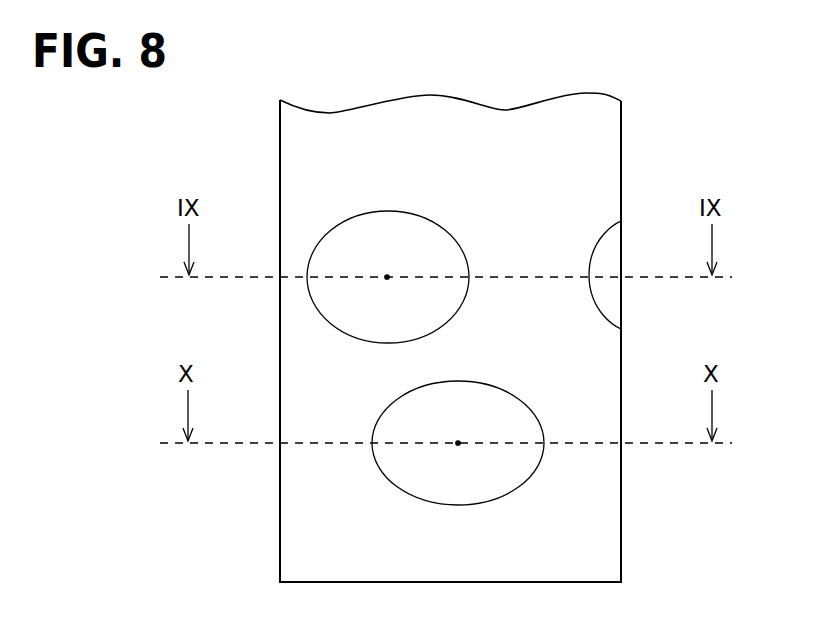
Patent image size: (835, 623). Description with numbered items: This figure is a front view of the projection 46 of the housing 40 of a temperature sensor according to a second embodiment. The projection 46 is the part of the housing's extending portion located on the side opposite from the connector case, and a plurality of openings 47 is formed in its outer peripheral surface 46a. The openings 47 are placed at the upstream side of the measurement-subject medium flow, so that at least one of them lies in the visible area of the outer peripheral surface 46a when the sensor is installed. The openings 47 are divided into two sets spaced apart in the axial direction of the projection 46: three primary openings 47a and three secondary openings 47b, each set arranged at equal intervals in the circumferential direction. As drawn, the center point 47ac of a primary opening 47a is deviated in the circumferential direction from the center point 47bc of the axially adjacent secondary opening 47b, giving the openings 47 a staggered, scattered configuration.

The housing 40 is at (529, 337).
The projection 46 is at (590, 502).
The outer peripheral surface 46a is at (605, 543).
The opening 47 is at (445, 386).
The primary opening 47a is at (308, 292).
The secondary opening 47b is at (377, 467).
The center point of primary opening 47ac is at (387, 277).
The center point of secondary opening 47bc is at (458, 443).